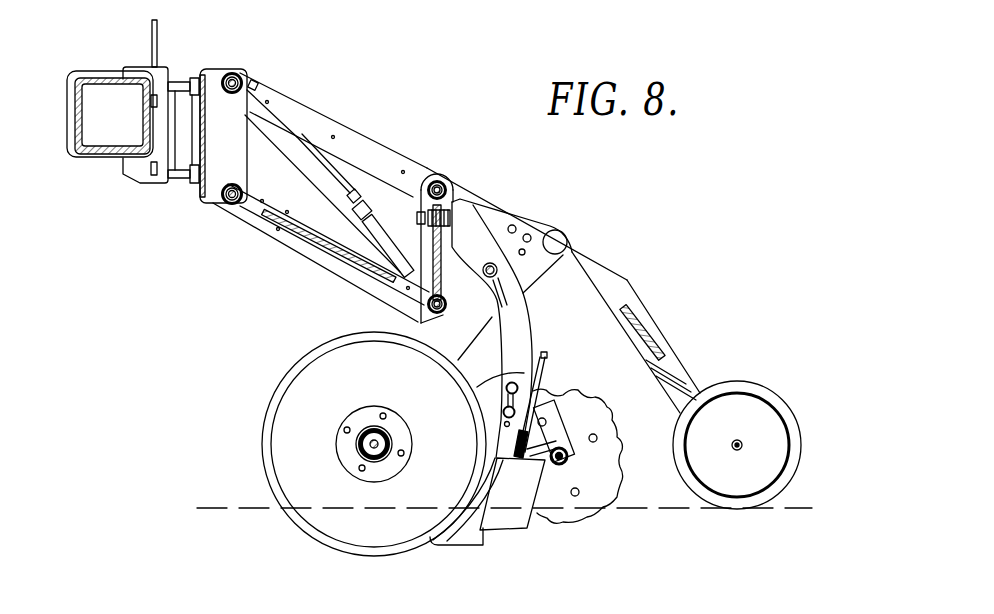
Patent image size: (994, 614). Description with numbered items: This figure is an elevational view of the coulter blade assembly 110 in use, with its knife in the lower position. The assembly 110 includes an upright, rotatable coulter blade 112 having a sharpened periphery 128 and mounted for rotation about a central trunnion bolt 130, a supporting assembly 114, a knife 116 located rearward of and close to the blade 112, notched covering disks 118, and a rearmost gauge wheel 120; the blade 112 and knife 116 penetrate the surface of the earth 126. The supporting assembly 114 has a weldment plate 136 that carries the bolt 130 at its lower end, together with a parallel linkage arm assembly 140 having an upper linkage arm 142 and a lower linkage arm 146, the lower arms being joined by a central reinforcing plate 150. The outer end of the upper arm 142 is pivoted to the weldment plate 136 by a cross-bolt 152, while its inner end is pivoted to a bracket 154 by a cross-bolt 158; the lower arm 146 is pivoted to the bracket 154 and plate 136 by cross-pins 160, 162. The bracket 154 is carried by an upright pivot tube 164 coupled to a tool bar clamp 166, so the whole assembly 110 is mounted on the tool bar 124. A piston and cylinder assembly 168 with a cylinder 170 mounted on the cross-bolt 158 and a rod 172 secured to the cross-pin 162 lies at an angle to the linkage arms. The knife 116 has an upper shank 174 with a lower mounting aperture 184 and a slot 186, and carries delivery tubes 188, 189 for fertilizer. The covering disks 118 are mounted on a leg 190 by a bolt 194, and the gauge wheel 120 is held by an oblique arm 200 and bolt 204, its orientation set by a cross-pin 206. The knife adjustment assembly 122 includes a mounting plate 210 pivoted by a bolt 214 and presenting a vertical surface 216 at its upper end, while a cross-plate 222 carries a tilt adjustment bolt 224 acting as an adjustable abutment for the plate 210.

The coulter blade assembly 110 is at (675, 171).
The coulter blade 112 is at (264, 385).
The supporting assembly 114 is at (571, 195).
The knife 116 is at (499, 550).
The covering disks 118 is at (633, 497).
The gauge wheel 120 is at (762, 345).
The knife adjustment assembly 122 is at (551, 317).
The tool bar 124 is at (93, 78).
The earth 126 is at (222, 506).
The sharpened periphery 128 is at (263, 441).
The central trunnion bolt 130 is at (357, 447).
The weldment plate 136 is at (489, 226).
The parallel linkage arm assembly 140 is at (330, 74).
The upper linkage arm 142 is at (281, 98).
The lower linkage arm 146 is at (262, 234).
The central reinforcing plate 150 is at (298, 236).
The cross-bolt 152 is at (440, 181).
The bracket 154 is at (217, 180).
The cross-bolt 158 is at (225, 74).
The cross-pin 160 is at (223, 203).
The cross-pin 162 is at (430, 312).
The upright pivot tube 164 is at (180, 118).
The tool bar clamp 166 is at (137, 172).
The piston and cylinder assembly 168 is at (346, 149).
The cylinder 170 is at (305, 163).
The rod 172 is at (407, 277).
The upper shank 174 is at (500, 378).
The lower mounting aperture 184 is at (504, 425).
The slot 186 is at (506, 402).
The delivery tube 188 is at (566, 416).
The delivery tube 189 is at (547, 356).
The leg 190 is at (483, 427).
The bolt 194 is at (569, 461).
The oblique arm 200 is at (648, 316).
The bolt 204 is at (558, 242).
The cross-pin 206 is at (524, 254).
The mounting plate 210 is at (488, 200).
The bolt 214 is at (525, 294).
The vertical surface 216 is at (446, 205).
The cross-plate 222 is at (446, 306).
The tilt adjustment bolt 224 is at (415, 212).